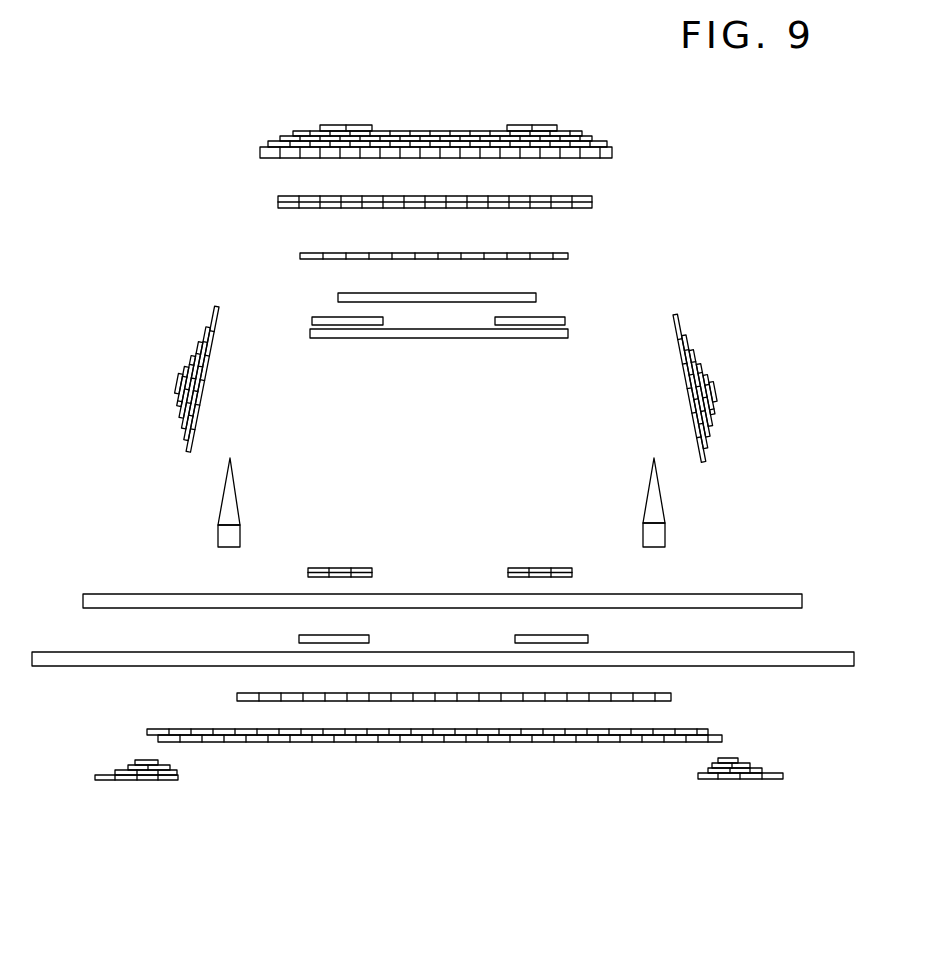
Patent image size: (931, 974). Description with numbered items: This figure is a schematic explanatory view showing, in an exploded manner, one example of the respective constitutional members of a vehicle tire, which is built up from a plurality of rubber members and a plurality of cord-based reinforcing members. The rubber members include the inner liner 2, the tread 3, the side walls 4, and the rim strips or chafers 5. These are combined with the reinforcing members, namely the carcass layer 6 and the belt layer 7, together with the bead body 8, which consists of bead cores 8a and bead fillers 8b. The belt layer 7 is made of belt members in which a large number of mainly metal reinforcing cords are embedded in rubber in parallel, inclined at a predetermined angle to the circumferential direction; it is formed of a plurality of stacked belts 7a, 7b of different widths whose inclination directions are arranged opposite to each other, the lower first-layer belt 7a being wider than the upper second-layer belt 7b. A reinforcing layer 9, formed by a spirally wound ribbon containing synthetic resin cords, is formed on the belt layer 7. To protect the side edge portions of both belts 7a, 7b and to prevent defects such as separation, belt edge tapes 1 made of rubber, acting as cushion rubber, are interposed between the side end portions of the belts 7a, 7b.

The belt edge tape 1 is at (323, 317).
The inner liner 2 is at (410, 742).
The tread 3 is at (438, 130).
The side wall 4 is at (698, 368).
The rim strip or chafer 5 is at (132, 780).
The carcass layer 6 is at (817, 655).
The belt layer 7 is at (439, 381).
The belt 7a is at (500, 408).
The belt 7b is at (462, 302).
The bead body 8 is at (366, 497).
The bead core 8a is at (223, 535).
The bead filler 8b is at (227, 495).
The reinforcing layer 9 is at (332, 253).